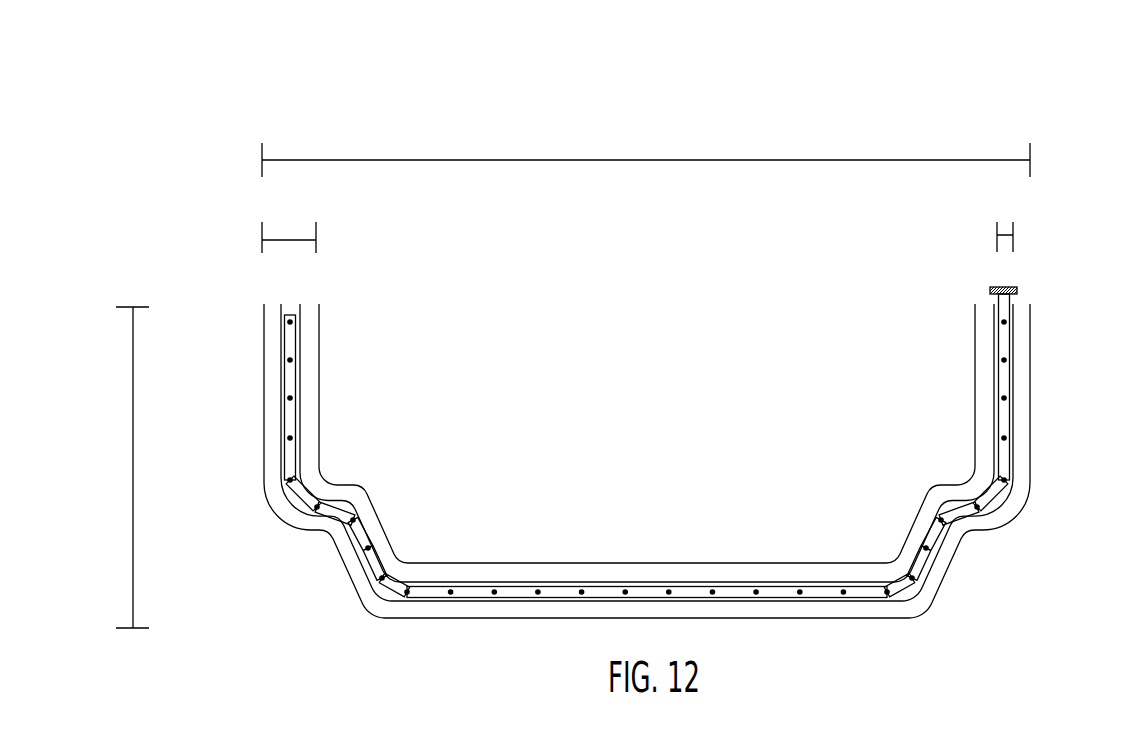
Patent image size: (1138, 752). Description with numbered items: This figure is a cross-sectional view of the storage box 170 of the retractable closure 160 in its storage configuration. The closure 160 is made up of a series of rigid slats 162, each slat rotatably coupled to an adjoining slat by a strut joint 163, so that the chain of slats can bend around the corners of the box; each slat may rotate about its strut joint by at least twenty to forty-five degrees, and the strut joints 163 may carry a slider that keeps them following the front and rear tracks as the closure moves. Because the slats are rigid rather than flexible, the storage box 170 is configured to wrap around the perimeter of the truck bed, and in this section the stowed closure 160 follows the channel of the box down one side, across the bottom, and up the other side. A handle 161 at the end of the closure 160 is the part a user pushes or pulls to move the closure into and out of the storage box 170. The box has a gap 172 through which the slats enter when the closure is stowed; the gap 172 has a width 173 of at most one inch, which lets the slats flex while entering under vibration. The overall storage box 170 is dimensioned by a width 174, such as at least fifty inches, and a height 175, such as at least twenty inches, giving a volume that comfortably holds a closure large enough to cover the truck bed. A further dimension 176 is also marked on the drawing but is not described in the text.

The closure 160 is at (853, 600).
The handle 161 is at (1007, 287).
The slats 162 is at (1008, 333).
The strut joints 163 is at (1010, 363).
The storage box 170 is at (228, 182).
The gap 172 is at (993, 322).
The width of gap 173 is at (1005, 223).
The width 174 is at (646, 149).
The height 175 is at (118, 467).
The arm width dimension 176 is at (289, 227).